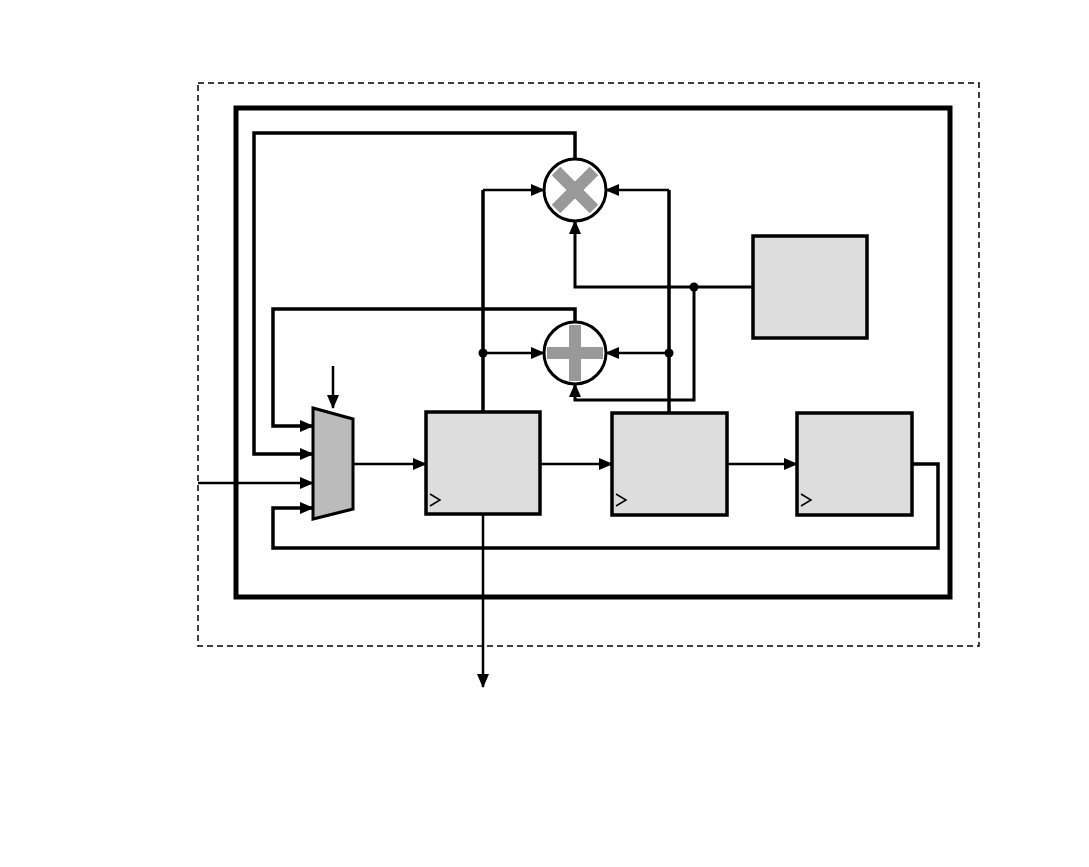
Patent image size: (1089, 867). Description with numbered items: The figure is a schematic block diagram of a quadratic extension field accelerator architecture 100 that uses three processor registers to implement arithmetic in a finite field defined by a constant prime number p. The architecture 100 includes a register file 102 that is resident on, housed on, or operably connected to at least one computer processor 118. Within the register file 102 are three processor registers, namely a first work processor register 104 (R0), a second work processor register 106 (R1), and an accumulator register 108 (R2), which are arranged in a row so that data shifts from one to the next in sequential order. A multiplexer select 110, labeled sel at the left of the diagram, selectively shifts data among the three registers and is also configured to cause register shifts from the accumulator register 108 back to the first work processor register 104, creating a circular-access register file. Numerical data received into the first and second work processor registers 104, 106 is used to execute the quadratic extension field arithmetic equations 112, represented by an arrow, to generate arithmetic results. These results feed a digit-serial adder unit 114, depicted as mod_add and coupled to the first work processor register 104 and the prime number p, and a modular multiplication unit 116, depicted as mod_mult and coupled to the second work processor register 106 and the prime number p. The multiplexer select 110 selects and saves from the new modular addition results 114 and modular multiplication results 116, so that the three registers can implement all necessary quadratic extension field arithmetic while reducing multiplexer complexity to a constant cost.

The F_p^2 accelerator architecture 100 is at (641, 729).
The register file 102 is at (184, 190).
The first work processor register 104 is at (430, 514).
The second work processor register 106 is at (672, 515).
The accumulator register 108 is at (875, 515).
The multiplexer select 110 is at (313, 518).
The quadratic extension field arithmetic equations 112 is at (475, 258).
The digit-serial adder unit 114 is at (612, 342).
The modular multiplication unit 116 is at (612, 170).
The computer processor 118 is at (979, 278).